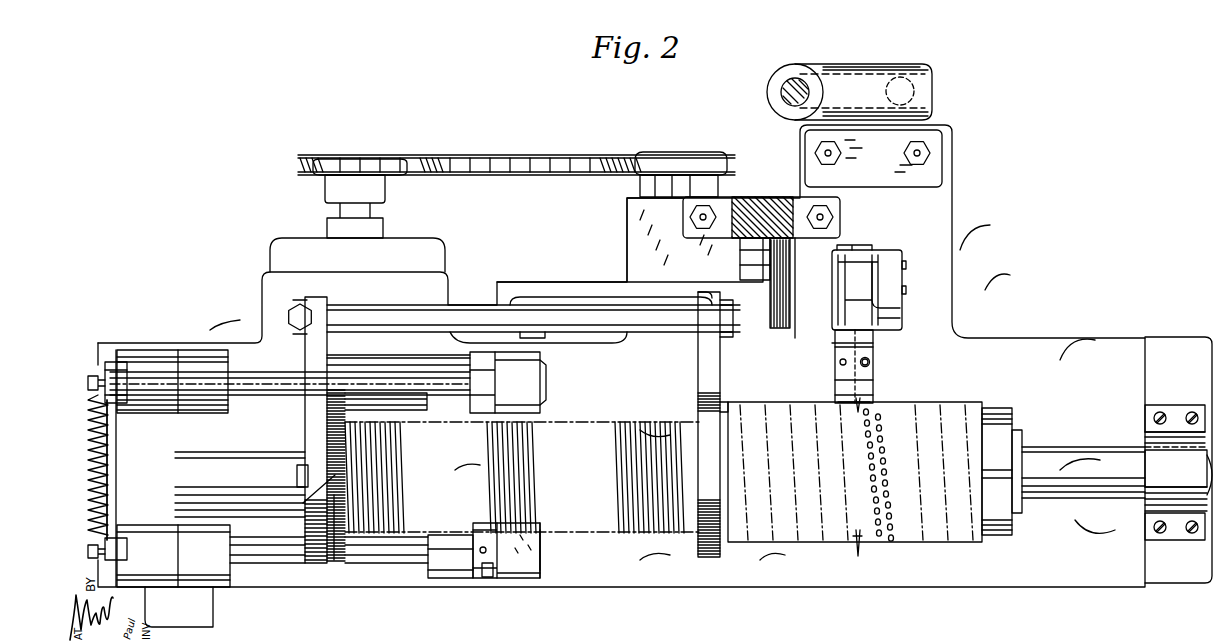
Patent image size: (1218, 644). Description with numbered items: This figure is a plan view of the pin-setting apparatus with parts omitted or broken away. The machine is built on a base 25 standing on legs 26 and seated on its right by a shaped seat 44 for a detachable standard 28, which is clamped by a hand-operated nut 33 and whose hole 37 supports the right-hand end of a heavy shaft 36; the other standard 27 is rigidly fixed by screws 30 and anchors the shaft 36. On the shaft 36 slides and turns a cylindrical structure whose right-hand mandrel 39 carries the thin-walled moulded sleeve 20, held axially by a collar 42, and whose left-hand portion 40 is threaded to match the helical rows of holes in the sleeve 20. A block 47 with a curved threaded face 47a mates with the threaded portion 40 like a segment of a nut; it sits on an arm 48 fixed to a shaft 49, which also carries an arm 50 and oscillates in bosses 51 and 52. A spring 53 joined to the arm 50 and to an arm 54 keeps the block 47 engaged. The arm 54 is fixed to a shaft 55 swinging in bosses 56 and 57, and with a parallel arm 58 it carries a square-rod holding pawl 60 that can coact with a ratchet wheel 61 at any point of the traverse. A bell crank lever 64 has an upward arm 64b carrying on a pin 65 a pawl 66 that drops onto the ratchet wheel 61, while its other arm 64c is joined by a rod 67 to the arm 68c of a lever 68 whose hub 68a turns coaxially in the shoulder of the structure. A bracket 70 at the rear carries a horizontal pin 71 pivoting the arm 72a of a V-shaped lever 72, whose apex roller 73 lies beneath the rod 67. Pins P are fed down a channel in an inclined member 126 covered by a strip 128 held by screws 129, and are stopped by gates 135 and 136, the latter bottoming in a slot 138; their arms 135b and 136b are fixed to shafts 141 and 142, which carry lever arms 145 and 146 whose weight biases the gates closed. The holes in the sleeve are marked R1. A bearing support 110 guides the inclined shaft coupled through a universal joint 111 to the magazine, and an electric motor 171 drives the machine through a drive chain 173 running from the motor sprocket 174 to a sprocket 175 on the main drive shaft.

The sleeve element 20 is at (846, 548).
The base 25 is at (1028, 338).
The supports or legs 26 is at (213, 617).
The standard 27 is at (75, 466).
The standard 28 is at (1148, 505).
The screws 30 is at (1190, 534).
The hand-operated clamping nut 33 is at (1207, 466).
The shaft 36 is at (1100, 447).
The hole 37 is at (1174, 405).
The mandrel 39 is at (1022, 426).
The threaded portion 40 is at (619, 412).
The collar 42 is at (1005, 410).
The seat 44 is at (1155, 583).
The block 47 is at (506, 550).
The face 47a is at (536, 530).
The arm 48 is at (487, 578).
The shaft 49 is at (272, 563).
The arm 50 is at (128, 550).
The boss 51 is at (225, 552).
The boss 52 is at (450, 556).
The spring 53 is at (81, 470).
The arm 54 is at (103, 370).
The shaft 55 is at (378, 365).
The boss 56 is at (230, 362).
The boss 57 is at (427, 358).
The arm 58 is at (520, 378).
The holding pawl 60 is at (258, 395).
The ratchet wheel 61 is at (345, 563).
The bell crank lever 64 is at (298, 535).
The upwardly directed arm 64b is at (318, 450).
The arm 64c is at (322, 348).
The pin 65 is at (297, 476).
The pawl 66 is at (303, 503).
The rod 67 is at (478, 305).
The lever 68 is at (730, 397).
The hub 68a is at (710, 415).
The arm 68c is at (722, 354).
The bracket 70 is at (740, 252).
The horizontal pin 71 is at (765, 197).
The V-shaped lever 72 is at (584, 276).
The arm 72a is at (780, 290).
The roller 73 is at (535, 343).
The bearing support 110 is at (878, 62).
The flexible or universal joint 111 is at (781, 94).
The elongated downwardly inclined member 126 is at (870, 363).
The strip-like member 128 is at (840, 390).
The screws 129 is at (840, 362).
The gate 135 is at (880, 335).
The arm 135b is at (832, 314).
The gate 136 is at (875, 350).
The arm 136b is at (880, 312).
The slot 138 is at (835, 347).
The shaft 141 is at (906, 265).
The shaft 142 is at (906, 290).
The lever arm 145 is at (905, 287).
The lever arm 146 is at (880, 322).
The electric motor 171 is at (278, 252).
The drive chain 173 is at (575, 157).
The motor sprocket 174 is at (385, 163).
The sprocket 175 is at (728, 164).
The pin P is at (870, 390).
The holes R1 is at (866, 492).